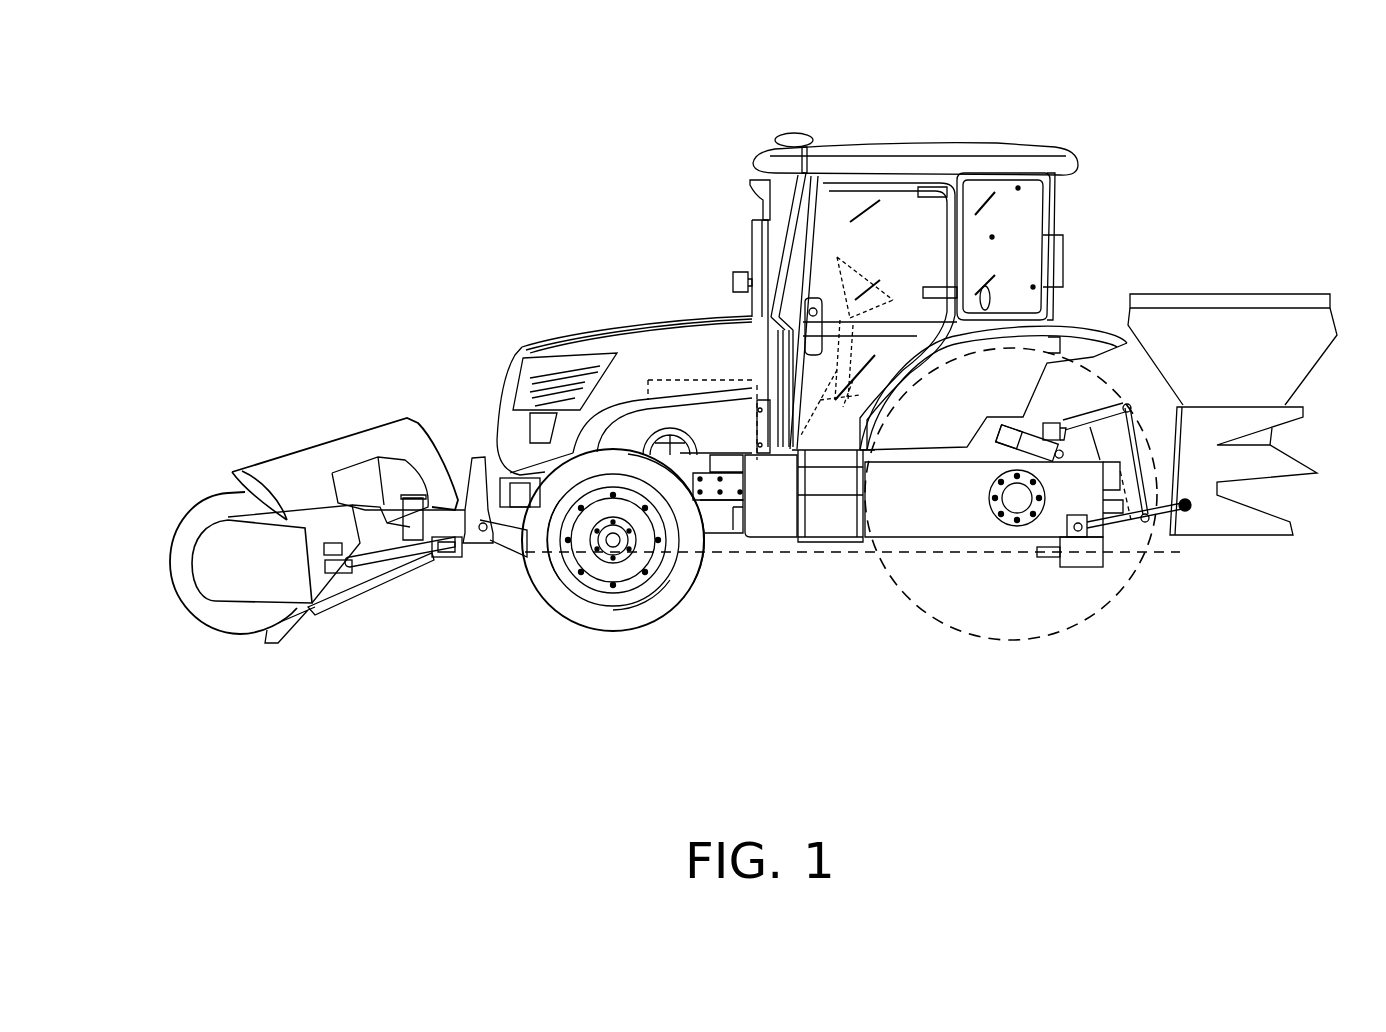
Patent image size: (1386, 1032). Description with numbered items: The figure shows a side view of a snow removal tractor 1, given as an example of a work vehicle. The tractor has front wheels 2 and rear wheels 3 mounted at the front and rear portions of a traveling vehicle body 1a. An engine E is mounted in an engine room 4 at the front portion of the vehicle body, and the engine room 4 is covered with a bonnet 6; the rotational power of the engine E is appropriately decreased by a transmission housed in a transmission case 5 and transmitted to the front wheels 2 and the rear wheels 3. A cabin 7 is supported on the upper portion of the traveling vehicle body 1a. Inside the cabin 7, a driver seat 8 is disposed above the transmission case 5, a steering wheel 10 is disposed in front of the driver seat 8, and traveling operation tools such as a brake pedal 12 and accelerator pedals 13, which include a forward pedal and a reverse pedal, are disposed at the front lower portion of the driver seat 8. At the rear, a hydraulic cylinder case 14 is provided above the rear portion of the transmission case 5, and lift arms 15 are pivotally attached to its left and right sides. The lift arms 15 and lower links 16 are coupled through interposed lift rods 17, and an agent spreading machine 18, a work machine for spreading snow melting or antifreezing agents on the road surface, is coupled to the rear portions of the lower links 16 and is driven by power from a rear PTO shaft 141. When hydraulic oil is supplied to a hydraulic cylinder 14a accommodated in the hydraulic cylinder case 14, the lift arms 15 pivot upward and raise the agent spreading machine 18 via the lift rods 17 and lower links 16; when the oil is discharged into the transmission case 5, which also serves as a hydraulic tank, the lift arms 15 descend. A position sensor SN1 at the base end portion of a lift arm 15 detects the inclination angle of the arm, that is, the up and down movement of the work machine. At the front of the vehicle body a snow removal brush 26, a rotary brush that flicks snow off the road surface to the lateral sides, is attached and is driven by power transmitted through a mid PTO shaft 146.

The snow removal tractor 1 is at (437, 108).
The traveling vehicle body 1a is at (1096, 323).
The front wheels 2 is at (665, 598).
The rear wheels 3 is at (1105, 603).
The engine room 4 is at (637, 355).
The transmission case 5 is at (950, 528).
The bonnet 6 is at (700, 320).
The cabin 7 is at (973, 155).
The driver seat 8 is at (997, 283).
The steering wheel 10 is at (832, 302).
The brake pedal 12 is at (850, 500).
The accelerator pedals 13 is at (815, 520).
The hydraulic cylinder case 14 is at (1012, 418).
The hydraulic cylinder 14a is at (1002, 443).
The lift arms 15 is at (1128, 405).
The lower links 16 is at (1147, 525).
The lift rods 17 is at (1188, 512).
The agent spreading machine 18 is at (1332, 272).
The snow removal brush 26 is at (360, 372).
The rear PTO shaft 141 is at (1131, 520).
The mid PTO shaft 146 is at (1052, 557).
The engine E is at (651, 378).
The position sensor SN1 is at (1055, 422).